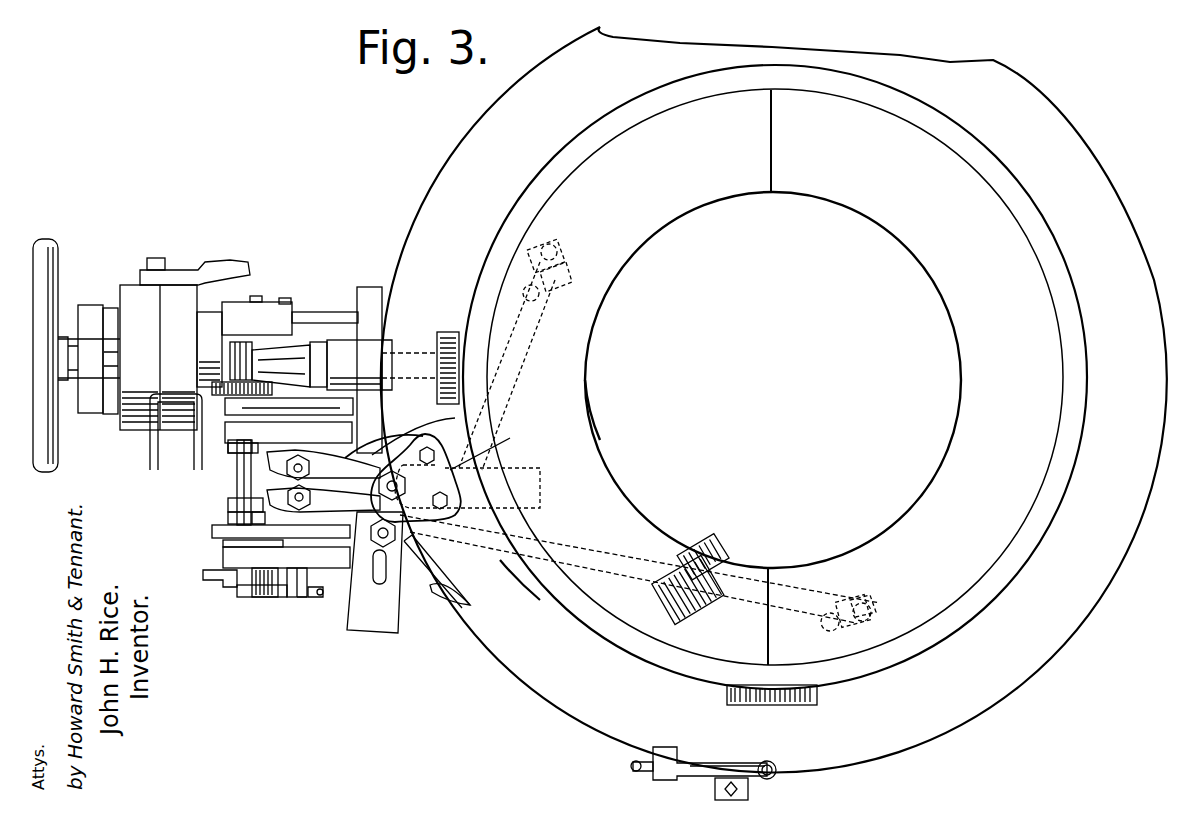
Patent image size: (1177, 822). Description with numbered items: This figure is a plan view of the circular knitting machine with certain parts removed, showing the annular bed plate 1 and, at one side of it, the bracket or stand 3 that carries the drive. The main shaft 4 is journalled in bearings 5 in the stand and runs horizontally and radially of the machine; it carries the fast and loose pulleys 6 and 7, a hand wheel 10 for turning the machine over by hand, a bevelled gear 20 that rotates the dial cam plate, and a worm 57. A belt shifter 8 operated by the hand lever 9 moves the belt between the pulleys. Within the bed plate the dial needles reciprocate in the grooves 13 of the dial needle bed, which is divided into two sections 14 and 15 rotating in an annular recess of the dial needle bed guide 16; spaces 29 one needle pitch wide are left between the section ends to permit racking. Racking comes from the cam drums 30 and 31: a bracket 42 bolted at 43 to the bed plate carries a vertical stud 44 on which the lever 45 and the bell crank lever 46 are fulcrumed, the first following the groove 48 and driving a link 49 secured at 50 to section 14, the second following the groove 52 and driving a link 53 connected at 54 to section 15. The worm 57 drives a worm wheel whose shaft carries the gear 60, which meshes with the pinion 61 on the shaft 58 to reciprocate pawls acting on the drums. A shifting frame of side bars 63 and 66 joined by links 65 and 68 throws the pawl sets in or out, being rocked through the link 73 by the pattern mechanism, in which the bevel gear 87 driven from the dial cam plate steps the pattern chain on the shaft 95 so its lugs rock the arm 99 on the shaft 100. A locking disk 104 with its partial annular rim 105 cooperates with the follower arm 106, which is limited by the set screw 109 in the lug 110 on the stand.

The bed plate 1 is at (450, 165).
The bracket or stand 3 is at (92, 305).
The main shaft 4 is at (390, 350).
The bearings 5 is at (75, 360).
The fast pulley 6 is at (185, 320).
The loose pulley 7 is at (135, 285).
The belt shifter 8 is at (148, 464).
The hand lever 9 is at (204, 262).
The hand wheel 10 is at (58, 248).
The grooves 13 is at (712, 565).
The dial needle bed section 14 is at (582, 434).
The dial needle bed section 15 is at (958, 312).
The dial needle bed guide 16 is at (565, 603).
The bevelled gear 20 is at (448, 332).
The spaces 29 is at (772, 192).
The cam drum 30 is at (270, 474).
The cam drum 31 is at (270, 488).
The bracket 42 is at (482, 469).
The bolt 43 is at (455, 418).
The vertical stud 44 is at (400, 495).
The lever 45 is at (370, 470).
The lever 46 is at (375, 620).
The groove 48 is at (258, 457).
The link 49 is at (512, 356).
The adjustable connection 50 is at (548, 298).
The groove 52 is at (240, 506).
The link 53 is at (428, 540).
The adjustable connection 54 is at (862, 598).
The worm 57 is at (255, 348).
The shaft 58 is at (240, 519).
The gear 60 is at (382, 365).
The pinion 61 is at (235, 396).
The side bar 63 is at (308, 595).
The link 65 is at (366, 585).
The side bar 66 is at (330, 438).
The link 68 is at (353, 418).
The link 73 is at (467, 602).
The bevel gear 87 is at (727, 695).
The shaft 95 is at (748, 797).
The arm 99 is at (704, 772).
The shaft 100 is at (660, 775).
The disk 104 is at (212, 570).
The annular rim 105 is at (240, 588).
The arm 106 is at (265, 600).
The set screw 109 is at (322, 598).
The lug 110 is at (302, 600).